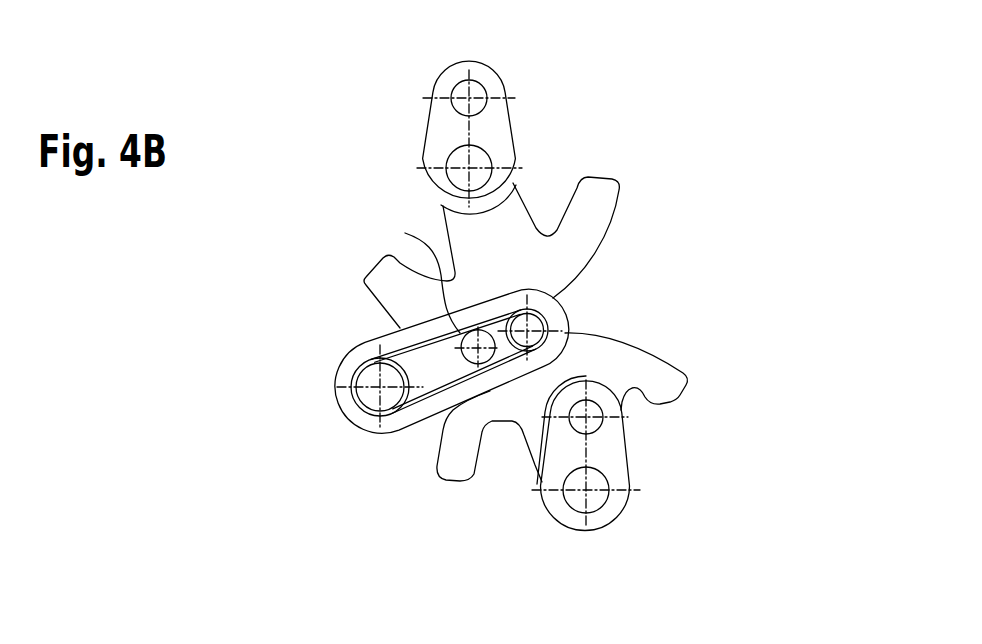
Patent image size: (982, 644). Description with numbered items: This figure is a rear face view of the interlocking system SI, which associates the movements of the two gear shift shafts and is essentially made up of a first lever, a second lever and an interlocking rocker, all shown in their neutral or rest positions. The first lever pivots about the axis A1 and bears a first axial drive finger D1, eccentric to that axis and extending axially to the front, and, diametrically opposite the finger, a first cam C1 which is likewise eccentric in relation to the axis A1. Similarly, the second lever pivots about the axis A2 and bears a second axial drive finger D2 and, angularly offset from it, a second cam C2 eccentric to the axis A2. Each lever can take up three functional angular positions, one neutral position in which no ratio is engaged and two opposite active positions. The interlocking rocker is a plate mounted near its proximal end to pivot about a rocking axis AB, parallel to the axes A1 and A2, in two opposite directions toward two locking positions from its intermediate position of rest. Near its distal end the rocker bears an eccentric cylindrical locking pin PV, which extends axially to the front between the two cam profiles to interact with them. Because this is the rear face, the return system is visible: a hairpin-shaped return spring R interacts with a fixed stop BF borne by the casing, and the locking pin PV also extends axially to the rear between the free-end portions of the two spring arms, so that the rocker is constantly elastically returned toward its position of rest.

The interlocking system SI is at (708, 268).
The first cam C1 is at (590, 214).
The second cam C2 is at (655, 370).
The first axial drive finger D1 is at (486, 66).
The second axial drive finger D2 is at (593, 424).
The pivot axis of the first lever A1 is at (471, 168).
The pivot axis of the second lever A2 is at (588, 490).
The return spring R is at (437, 368).
The rocking axis AB is at (378, 385).
The locking pin PV is at (567, 317).
The fixed stop BF is at (418, 272).